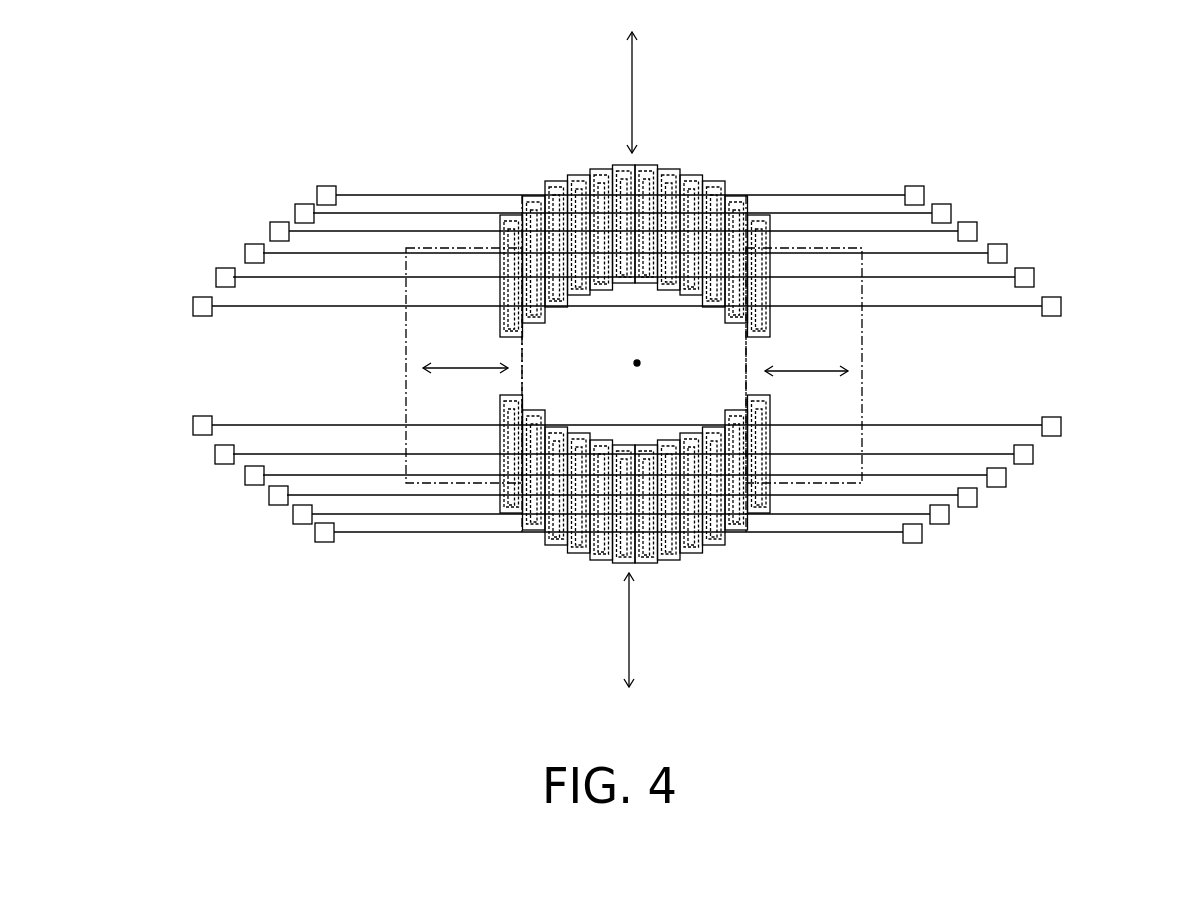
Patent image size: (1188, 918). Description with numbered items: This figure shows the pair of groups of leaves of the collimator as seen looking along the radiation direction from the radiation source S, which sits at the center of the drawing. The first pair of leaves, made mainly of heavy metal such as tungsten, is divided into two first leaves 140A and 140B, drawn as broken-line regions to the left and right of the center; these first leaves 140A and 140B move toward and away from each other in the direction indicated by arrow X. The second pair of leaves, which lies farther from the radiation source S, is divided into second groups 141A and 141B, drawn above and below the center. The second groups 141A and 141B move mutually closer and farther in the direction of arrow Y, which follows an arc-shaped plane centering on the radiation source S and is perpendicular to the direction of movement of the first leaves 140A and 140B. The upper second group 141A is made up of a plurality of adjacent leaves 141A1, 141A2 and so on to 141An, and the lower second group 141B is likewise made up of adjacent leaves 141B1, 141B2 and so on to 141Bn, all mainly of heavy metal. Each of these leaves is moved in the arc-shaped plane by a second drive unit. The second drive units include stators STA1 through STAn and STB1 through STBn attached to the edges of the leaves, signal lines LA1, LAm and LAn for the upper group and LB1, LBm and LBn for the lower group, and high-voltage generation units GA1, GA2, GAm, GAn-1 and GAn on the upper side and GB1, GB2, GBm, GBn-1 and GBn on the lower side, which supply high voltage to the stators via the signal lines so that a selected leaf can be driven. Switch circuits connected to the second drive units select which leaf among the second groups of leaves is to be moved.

The second group of leaves 141A is at (636, 219).
The leaf 141A1 is at (468, 220).
The leaf 141A2 is at (548, 196).
The leaf 141An is at (804, 220).
The stator STA1 is at (508, 303).
The stator STAn is at (768, 253).
The second group of leaves 141B is at (625, 512).
The leaf 141B1 is at (451, 507).
The leaf 141B2 is at (527, 531).
The leaf 141Bn is at (809, 512).
The stator STB1 is at (510, 442).
The stator STBn is at (768, 467).
The first leaf 140A is at (405, 377).
The first leaf 140B is at (862, 385).
The high-voltage generation unit GA1 is at (192, 306).
The high-voltage generation unit GA2 is at (220, 268).
The high-voltage generation unit GAm is at (330, 186).
The high-voltage generation unit GAn-1 is at (1031, 277).
The high-voltage generation unit GAn is at (1062, 306).
The high-voltage generation unit GB1 is at (192, 426).
The high-voltage generation unit GB2 is at (215, 457).
The high-voltage generation unit GBm is at (323, 543).
The high-voltage generation unit GBn-1 is at (1032, 458).
The high-voltage generation unit GBn is at (1062, 428).
The signal line LA1 is at (263, 308).
The signal line LAm is at (393, 195).
The signal line LAn is at (977, 308).
The signal line LB1 is at (265, 424).
The signal line LBn is at (1010, 424).
The signal line LBm is at (372, 533).
The direction of movement of the first leaves X is at (460, 368).
The arrow Y is at (634, 93).
The radiation source S is at (640, 363).